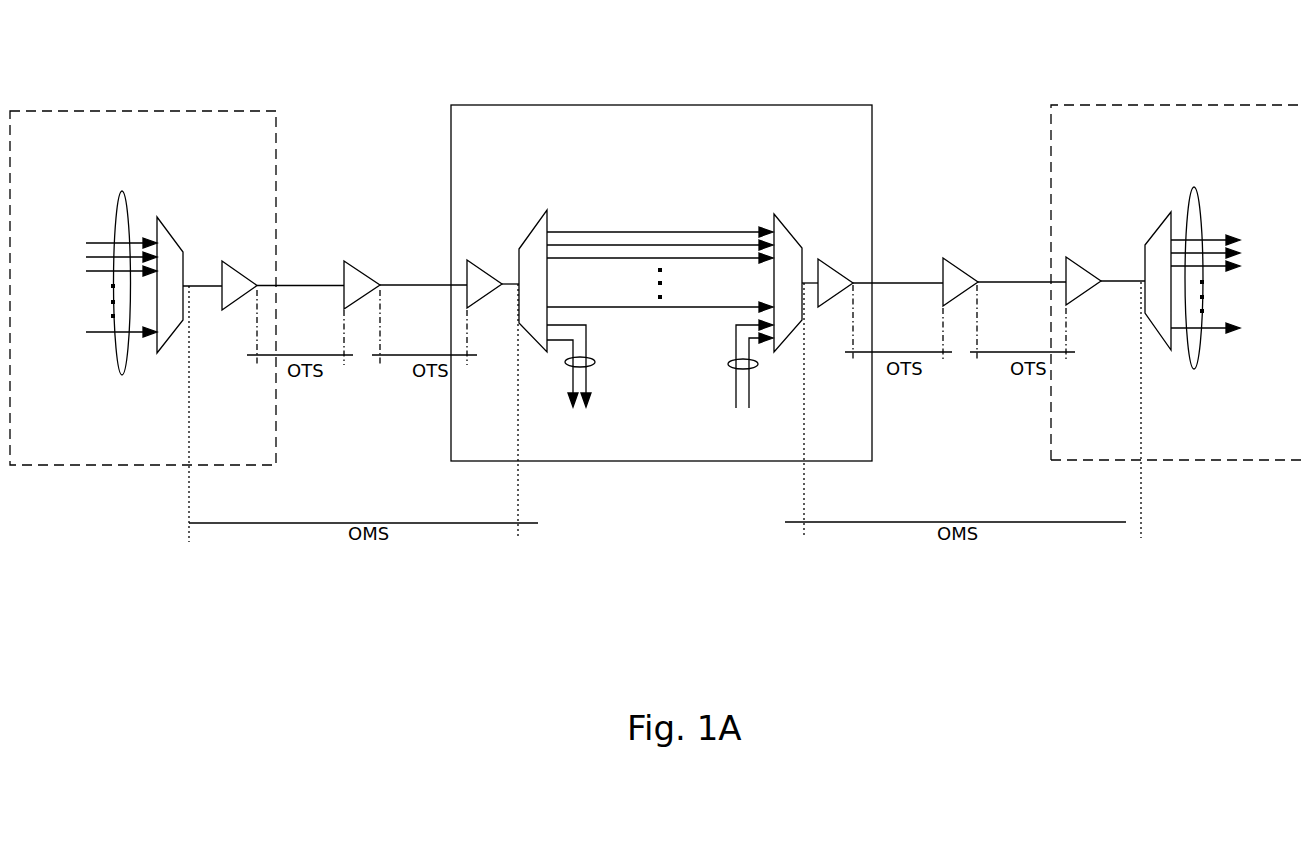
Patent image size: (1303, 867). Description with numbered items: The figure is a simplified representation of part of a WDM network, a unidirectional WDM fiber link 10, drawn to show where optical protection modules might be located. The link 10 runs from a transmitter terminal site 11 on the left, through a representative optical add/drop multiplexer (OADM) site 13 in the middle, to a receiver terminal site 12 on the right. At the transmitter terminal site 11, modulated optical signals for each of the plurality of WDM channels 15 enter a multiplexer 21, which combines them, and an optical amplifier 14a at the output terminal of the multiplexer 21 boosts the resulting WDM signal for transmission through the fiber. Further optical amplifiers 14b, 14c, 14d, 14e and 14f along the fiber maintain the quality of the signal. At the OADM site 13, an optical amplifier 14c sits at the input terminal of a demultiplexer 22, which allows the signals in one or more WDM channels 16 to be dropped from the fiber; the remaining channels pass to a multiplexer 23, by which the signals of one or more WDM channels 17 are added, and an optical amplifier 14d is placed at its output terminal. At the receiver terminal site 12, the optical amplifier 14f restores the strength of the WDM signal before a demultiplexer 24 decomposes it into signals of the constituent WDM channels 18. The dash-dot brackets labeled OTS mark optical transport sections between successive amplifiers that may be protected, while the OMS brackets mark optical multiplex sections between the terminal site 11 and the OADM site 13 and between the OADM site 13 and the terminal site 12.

The unidirectional WDM fiber link 10 is at (950, 30).
The transmitter terminal site 11 is at (257, 111).
The receiver terminal site 12 is at (1236, 105).
The optical add/drop multiplexer (OADM) site 13 is at (765, 105).
The optical amplifier 14a is at (222, 261).
The optical amplifier 14b is at (344, 261).
The optical amplifier 14c is at (467, 260).
The optical amplifier 14d is at (818, 259).
The optical amplifier 14e is at (943, 258).
The optical amplifier 14f is at (1066, 257).
The WDM channels 15 is at (114, 224).
The WDM channels 16 is at (596, 363).
The WDM channels 17 is at (728, 364).
The WDM channels 18 is at (1188, 195).
The multiplexer 21 is at (170, 232).
The demultiplexer 22 is at (547, 210).
The multiplexer 23 is at (781, 222).
The demultiplexer 24 is at (1163, 225).